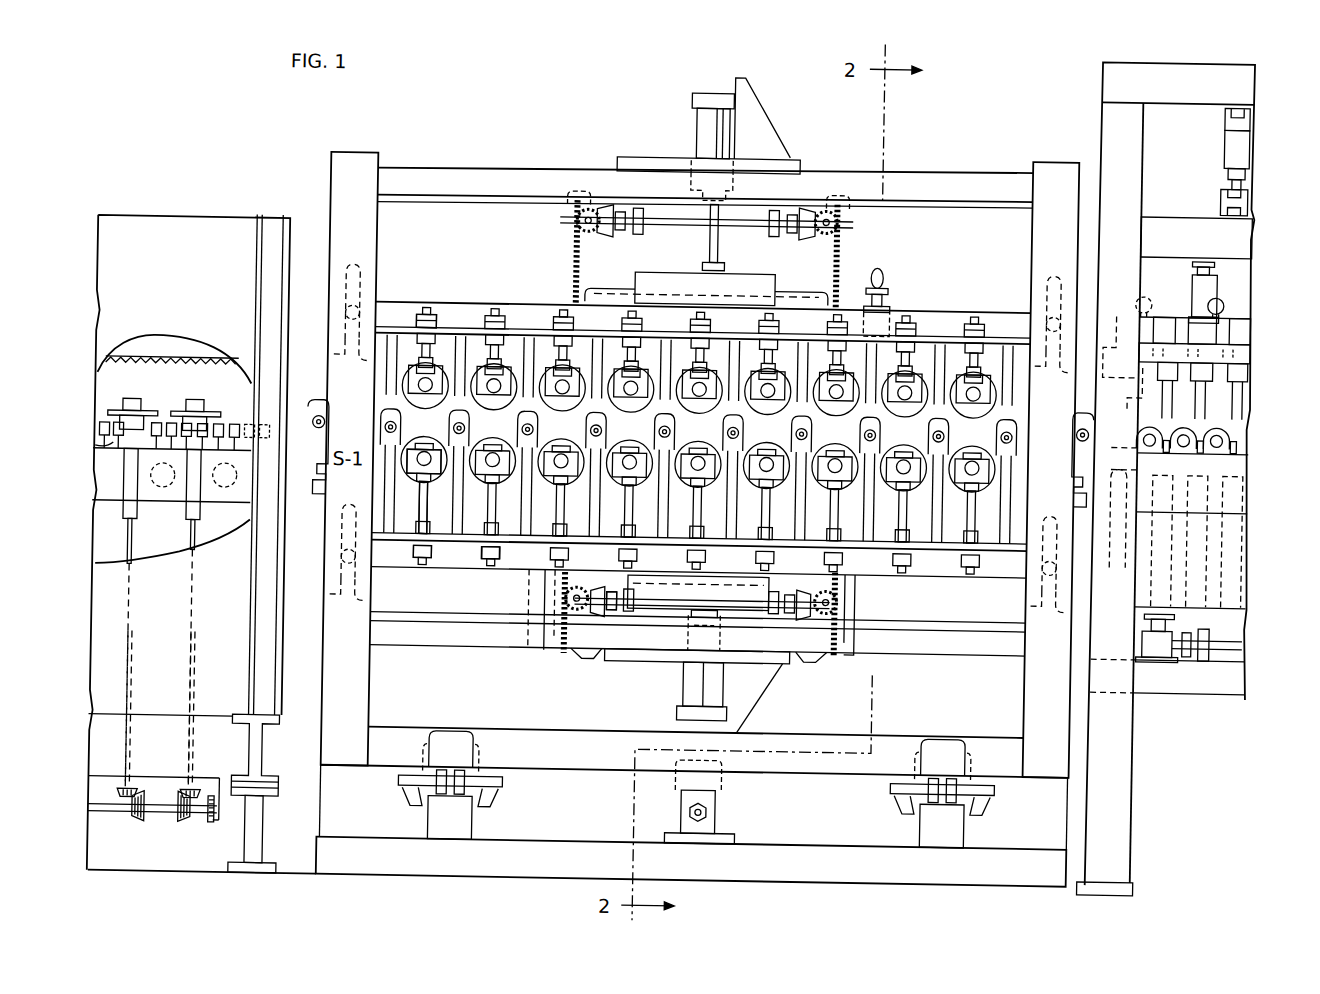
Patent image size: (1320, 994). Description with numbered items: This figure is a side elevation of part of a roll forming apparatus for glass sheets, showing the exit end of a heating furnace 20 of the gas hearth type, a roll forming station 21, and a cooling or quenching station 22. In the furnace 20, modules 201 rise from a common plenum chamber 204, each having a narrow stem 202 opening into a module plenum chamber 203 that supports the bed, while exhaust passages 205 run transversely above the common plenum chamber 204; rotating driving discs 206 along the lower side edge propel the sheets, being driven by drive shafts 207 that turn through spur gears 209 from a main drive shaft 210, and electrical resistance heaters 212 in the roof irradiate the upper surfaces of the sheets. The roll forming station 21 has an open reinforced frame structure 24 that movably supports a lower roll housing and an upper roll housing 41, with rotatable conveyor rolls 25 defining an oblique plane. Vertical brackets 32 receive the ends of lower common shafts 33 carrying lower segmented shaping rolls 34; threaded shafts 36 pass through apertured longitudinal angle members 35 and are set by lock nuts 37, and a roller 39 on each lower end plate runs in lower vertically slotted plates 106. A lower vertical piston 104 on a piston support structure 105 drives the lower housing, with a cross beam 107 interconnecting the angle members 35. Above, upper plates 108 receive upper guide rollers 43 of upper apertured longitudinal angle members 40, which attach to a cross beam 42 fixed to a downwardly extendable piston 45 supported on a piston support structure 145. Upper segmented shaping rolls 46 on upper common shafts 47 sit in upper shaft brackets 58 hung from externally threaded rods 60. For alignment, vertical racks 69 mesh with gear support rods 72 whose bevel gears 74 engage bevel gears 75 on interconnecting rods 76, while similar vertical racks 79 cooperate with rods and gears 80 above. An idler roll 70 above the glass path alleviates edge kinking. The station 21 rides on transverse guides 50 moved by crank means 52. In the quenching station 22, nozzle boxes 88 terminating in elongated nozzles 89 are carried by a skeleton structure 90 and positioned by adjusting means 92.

The heating furnace 20 is at (223, 208).
The roll forming station 21 is at (593, 490).
The cooling or quenching station 22 is at (1175, 467).
The open reinforced frame structure 24 is at (398, 162).
The rotatable conveyor rolls 25 is at (800, 448).
The vertical brackets 32 is at (410, 462).
The lower common shafts 33 is at (615, 452).
The lower segmented shaping rolls 34 is at (500, 445).
The apertured longitudinal angle members 35 is at (480, 557).
The threaded shafts 36 is at (415, 515).
The lock nuts 37 is at (415, 562).
The roller 39 is at (343, 582).
The upper apertured longitudinal angle members 40 is at (396, 300).
The upper roll housing 41 is at (962, 300).
The cross beam 42 is at (735, 270).
The upper guide rollers 43 is at (343, 329).
The downwardly extendable piston 45 is at (690, 125).
The upper segmented shaping rolls 46 is at (545, 445).
The upper common shaft 47 is at (705, 452).
The transverse guides 50 is at (400, 782).
The crank means 52 is at (722, 815).
The upper shaft brackets 58 is at (412, 376).
The externally threaded rods 60 is at (445, 297).
The vertical racks 69 is at (575, 665).
The idler roll 70 is at (875, 455).
The gear support rods 72 is at (566, 600).
The bevel gears 74 is at (840, 592).
The bevel gears 75 is at (598, 612).
The interconnecting rods 76 is at (678, 606).
The vertical racks 79 is at (575, 240).
The rods and gears 80 is at (658, 224).
The nozzle boxes 88 is at (1240, 320).
The elongated nozzles 89 is at (1135, 430).
The skeleton structure 90 is at (1095, 125).
The adjusting means 92 is at (1232, 636).
The lower vertical piston 104 is at (680, 690).
The piston support structure 105 is at (650, 662).
The lower vertically slotted plates 106 is at (343, 600).
The cross beam 107 is at (735, 610).
The upper plates 108 is at (343, 360).
The piston support structure 145 is at (658, 170).
The modules 201 is at (172, 432).
The stem 202 is at (98, 458).
The module plenum chamber 203 is at (106, 422).
The common plenum chamber 204 is at (160, 496).
The exhaust passages 205 is at (223, 494).
The rotating driving discs 206 is at (210, 432).
The drive shafts 207 is at (148, 640).
The spur gears 209 is at (180, 796).
The main drive shaft 210 is at (165, 825).
The electrical resistance heaters 212 is at (180, 365).